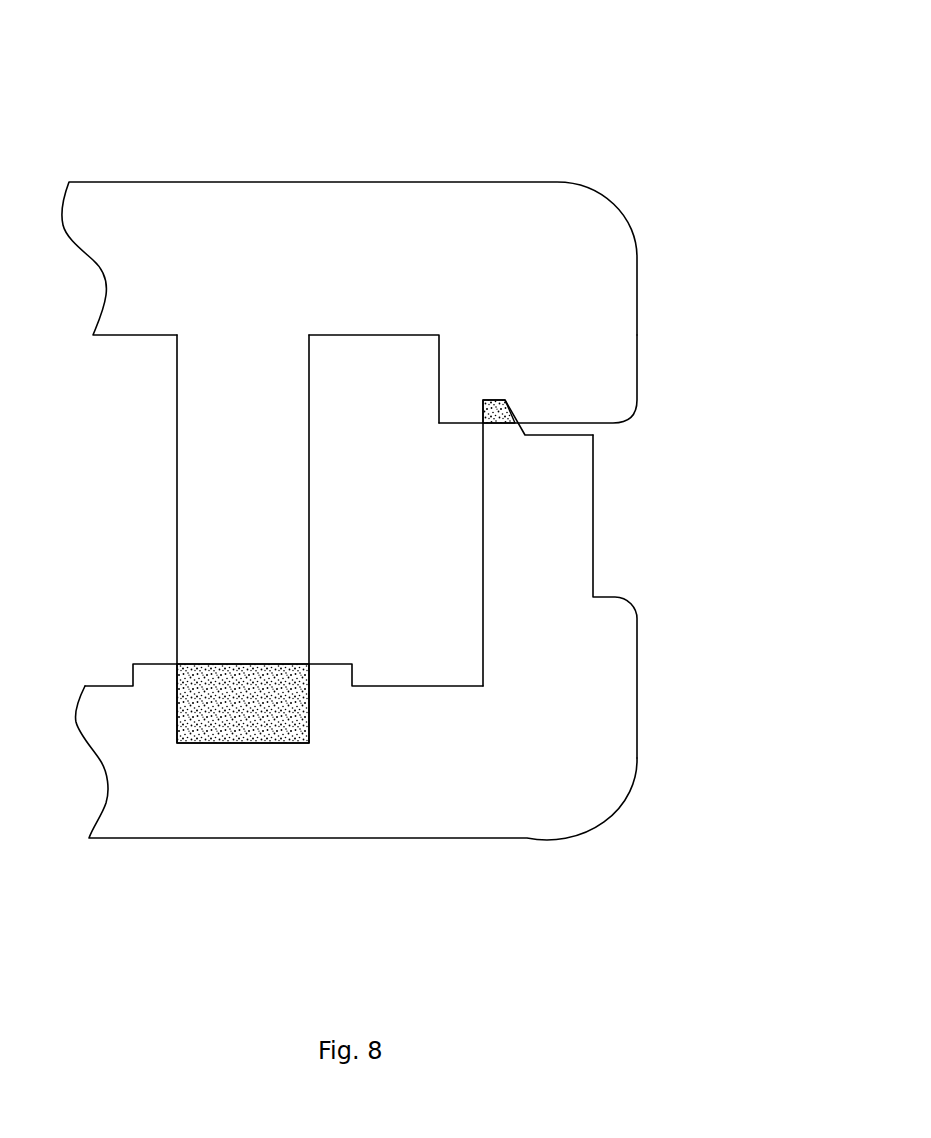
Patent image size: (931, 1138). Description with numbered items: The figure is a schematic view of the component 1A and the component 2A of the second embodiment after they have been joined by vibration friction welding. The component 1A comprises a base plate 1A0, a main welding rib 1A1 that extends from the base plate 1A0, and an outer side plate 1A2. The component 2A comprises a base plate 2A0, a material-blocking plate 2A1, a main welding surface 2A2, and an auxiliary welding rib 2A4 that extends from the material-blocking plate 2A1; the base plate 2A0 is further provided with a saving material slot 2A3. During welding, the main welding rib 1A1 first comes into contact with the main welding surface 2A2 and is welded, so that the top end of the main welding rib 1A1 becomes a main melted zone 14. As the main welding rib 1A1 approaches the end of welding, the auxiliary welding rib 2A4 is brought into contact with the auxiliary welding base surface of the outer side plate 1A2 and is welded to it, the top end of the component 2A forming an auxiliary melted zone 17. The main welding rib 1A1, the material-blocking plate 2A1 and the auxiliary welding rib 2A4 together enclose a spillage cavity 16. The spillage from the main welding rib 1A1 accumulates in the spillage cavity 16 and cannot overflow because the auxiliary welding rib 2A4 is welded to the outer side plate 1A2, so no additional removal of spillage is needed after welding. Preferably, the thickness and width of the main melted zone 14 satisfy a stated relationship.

The component 1A is at (399, 338).
The base plate 1A0 is at (430, 207).
The main welding rib 1A1 is at (197, 473).
The outer side plate 1A2 is at (588, 335).
The spillage cavity 16 is at (380, 392).
The auxiliary melted zone 17 is at (498, 400).
The component 2A is at (409, 687).
The base plate 2A0 is at (280, 793).
The material-blocking plate 2A1 is at (538, 542).
The main welding surface 2A2 is at (155, 664).
The saving material slot 2A3 is at (427, 688).
The auxiliary welding rib 2A4 is at (516, 434).
The main melted zone 14 is at (243, 720).